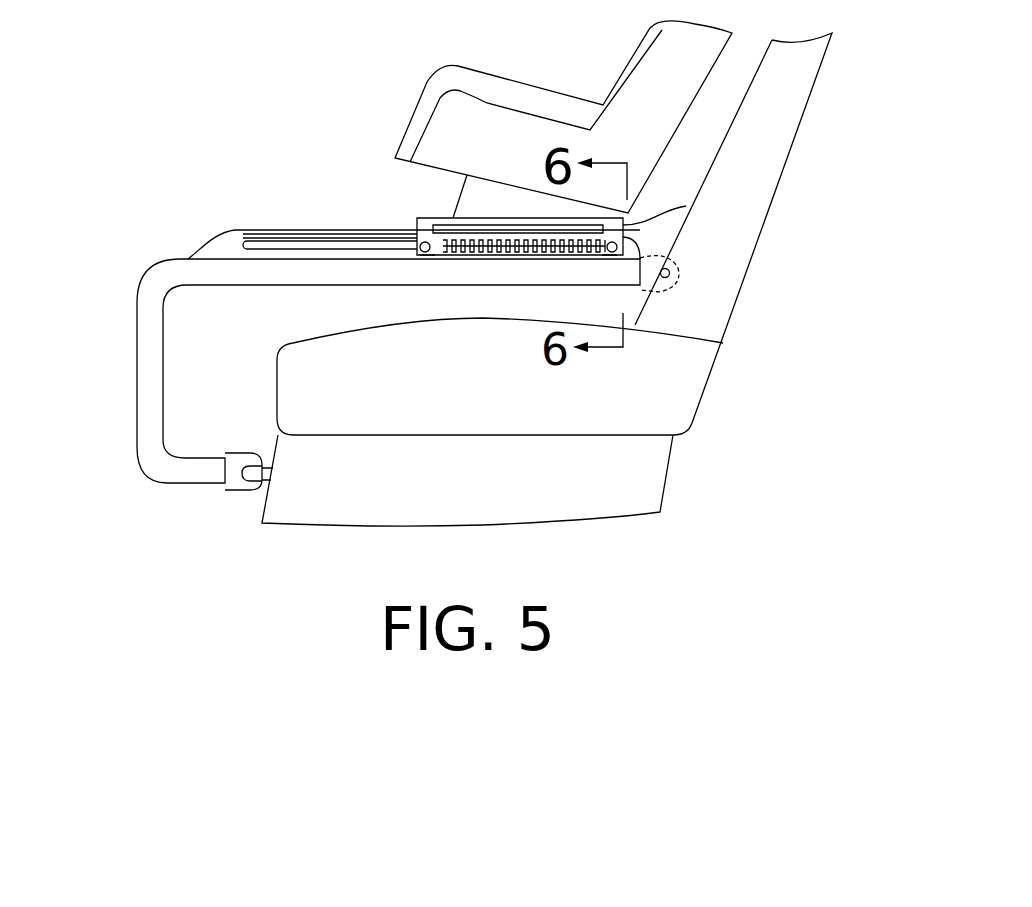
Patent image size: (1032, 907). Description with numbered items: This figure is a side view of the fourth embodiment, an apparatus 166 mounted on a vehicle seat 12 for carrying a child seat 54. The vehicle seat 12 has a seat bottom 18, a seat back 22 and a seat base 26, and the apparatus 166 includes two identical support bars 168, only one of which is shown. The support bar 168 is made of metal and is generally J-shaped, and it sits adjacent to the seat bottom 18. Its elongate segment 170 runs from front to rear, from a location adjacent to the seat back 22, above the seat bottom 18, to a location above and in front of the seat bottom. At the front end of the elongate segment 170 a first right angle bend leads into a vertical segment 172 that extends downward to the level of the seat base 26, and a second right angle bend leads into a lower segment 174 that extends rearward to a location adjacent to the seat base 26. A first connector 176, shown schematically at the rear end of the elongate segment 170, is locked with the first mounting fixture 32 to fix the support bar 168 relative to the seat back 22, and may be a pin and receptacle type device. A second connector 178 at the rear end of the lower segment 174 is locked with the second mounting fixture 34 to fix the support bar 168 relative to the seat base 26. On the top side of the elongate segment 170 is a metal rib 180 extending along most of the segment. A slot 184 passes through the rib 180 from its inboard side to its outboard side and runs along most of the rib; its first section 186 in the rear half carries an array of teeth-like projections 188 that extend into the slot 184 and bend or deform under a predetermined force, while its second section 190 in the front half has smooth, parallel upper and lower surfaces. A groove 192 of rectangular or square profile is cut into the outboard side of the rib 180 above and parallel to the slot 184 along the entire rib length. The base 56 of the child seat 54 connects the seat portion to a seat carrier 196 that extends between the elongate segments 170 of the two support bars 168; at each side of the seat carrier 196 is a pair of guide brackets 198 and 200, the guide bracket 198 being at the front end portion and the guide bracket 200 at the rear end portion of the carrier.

The vehicle seat 12 is at (773, 234).
The seat bottom 18 is at (698, 380).
The seat back 22 is at (772, 174).
The seat base 26 is at (657, 476).
The first mounting fixture 32 is at (675, 278).
The second mounting fixture 34 is at (221, 433).
The child seat 54 is at (600, 60).
The base 56 is at (463, 200).
The apparatus 166 is at (163, 143).
The support bar 168 is at (341, 390).
The elongate segment 170 is at (215, 270).
The vertical segment 172 is at (148, 382).
The lower segment 174 is at (190, 478).
The first connector 176 is at (658, 252).
The second connector 178 is at (266, 462).
The rib 180 is at (220, 247).
The slot 184 is at (253, 240).
The first section 186 is at (502, 304).
The projections 188 is at (497, 252).
The second section 190 is at (357, 248).
The groove 192 is at (277, 232).
The seat carrier 196 is at (471, 255).
The guide bracket 198 is at (433, 228).
The guide bracket 200 is at (684, 208).